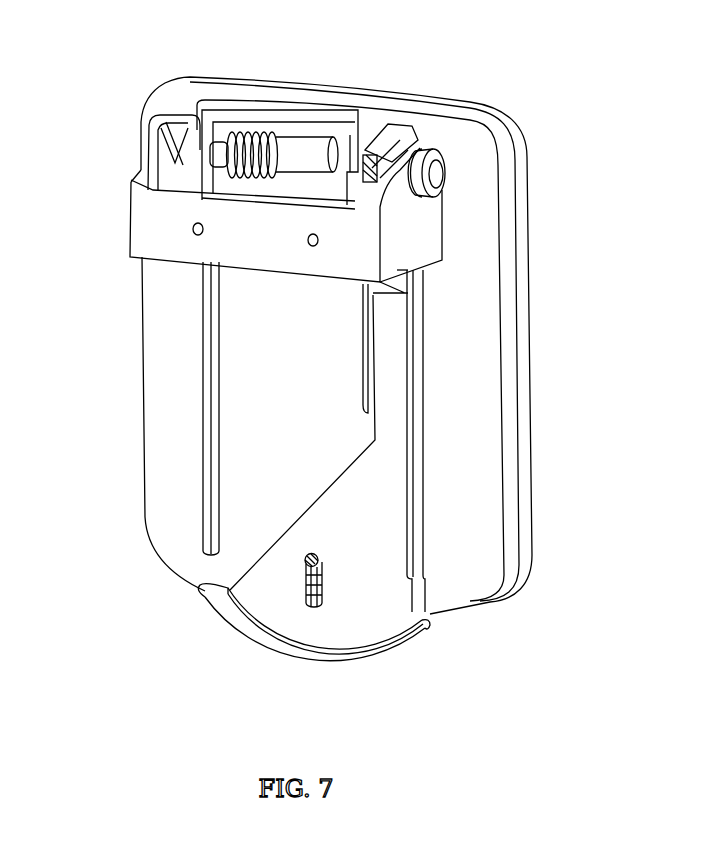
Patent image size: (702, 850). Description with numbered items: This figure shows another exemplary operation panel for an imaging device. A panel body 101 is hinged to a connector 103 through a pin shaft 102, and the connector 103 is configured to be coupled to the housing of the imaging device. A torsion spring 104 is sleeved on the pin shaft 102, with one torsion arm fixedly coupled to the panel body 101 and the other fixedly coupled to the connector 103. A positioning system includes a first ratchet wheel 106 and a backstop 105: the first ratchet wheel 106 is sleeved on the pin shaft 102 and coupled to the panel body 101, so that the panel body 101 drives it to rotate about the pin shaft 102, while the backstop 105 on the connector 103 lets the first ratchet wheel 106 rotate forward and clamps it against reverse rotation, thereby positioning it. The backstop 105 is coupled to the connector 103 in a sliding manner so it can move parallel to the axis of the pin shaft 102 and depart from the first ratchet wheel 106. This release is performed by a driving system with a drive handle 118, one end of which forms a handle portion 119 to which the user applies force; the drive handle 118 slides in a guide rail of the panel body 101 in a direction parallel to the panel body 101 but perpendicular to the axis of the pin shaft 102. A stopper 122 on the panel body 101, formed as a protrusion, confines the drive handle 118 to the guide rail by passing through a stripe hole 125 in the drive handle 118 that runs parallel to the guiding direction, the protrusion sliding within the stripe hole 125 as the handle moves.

The panel body 101 is at (167, 372).
The pin shaft 102 is at (432, 176).
The connector 103 is at (170, 225).
The torsion spring 104 is at (211, 138).
The backstop 105 is at (410, 120).
The first ratchet wheel 106 is at (373, 140).
The drive handle 118 is at (370, 560).
The handle portion 119 is at (250, 640).
The stopper 122 is at (308, 554).
The stripe hole 125 is at (306, 611).